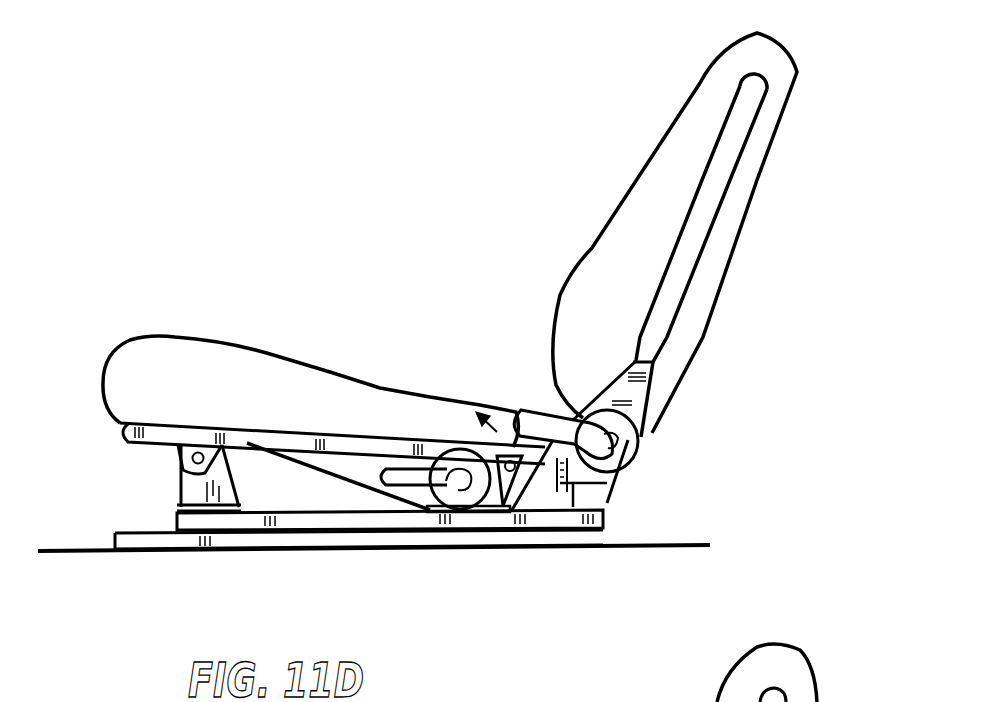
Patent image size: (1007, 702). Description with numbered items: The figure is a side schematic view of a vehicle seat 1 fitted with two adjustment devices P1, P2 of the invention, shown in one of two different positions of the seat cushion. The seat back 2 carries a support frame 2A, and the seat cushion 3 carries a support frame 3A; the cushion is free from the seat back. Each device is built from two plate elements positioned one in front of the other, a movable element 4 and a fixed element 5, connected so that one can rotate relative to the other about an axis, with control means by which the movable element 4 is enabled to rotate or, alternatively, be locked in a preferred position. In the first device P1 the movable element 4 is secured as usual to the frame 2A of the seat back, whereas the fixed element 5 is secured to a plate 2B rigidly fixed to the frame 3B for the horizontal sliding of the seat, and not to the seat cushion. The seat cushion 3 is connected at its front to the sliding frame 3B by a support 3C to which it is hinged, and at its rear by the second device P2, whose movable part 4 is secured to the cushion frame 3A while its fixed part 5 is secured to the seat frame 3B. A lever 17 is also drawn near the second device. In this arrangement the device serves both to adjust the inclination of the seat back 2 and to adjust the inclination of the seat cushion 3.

The vehicle seat 1 is at (459, 371).
The seat back 2 is at (648, 162).
The support frame of the seat back 2A is at (713, 203).
The plate 2B is at (600, 496).
The seat cushion 3 is at (330, 370).
The support frame of the seat cushion 3A is at (247, 440).
The frame for the horizontal sliding of the seat 3B is at (308, 520).
The support 3C is at (195, 495).
The movable plate element 4 is at (633, 390).
The fixed plate element 5 is at (435, 492).
The lever 17 is at (405, 485).
The first device P1 is at (640, 452).
The second device P2 is at (500, 430).